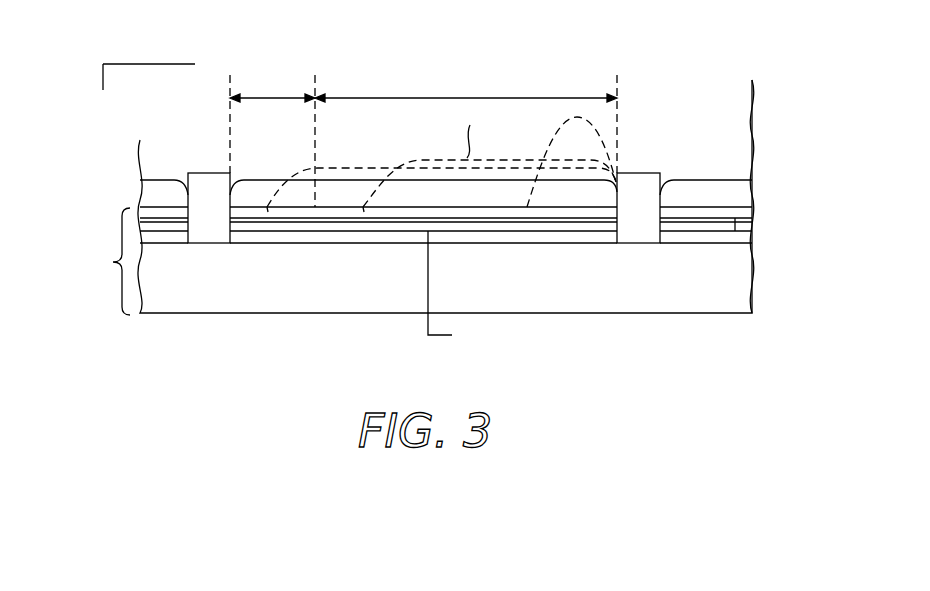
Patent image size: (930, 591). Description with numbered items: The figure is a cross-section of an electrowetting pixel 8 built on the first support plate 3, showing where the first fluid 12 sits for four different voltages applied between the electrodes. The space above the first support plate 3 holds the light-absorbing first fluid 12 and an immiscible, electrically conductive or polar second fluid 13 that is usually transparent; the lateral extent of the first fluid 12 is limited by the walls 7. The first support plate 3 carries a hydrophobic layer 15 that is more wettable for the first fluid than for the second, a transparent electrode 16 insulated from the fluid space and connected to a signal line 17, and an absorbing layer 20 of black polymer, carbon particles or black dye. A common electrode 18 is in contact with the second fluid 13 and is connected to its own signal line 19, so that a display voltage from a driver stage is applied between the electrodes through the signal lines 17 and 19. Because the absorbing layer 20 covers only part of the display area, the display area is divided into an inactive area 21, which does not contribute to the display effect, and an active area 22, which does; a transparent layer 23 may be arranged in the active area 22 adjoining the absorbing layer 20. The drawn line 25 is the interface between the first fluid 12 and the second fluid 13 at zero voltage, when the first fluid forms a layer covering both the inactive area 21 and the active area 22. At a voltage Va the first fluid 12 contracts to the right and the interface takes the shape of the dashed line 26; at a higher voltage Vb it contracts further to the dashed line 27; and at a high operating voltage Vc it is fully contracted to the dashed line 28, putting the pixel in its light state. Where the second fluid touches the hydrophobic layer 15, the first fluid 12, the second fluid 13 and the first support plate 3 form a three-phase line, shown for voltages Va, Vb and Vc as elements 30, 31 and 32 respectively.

The first support plate 3 is at (112, 261).
The walls 7 is at (200, 173).
The pixel 8 is at (433, 46).
The first fluid 12 is at (740, 193).
The second fluid 13 is at (740, 130).
The hydrophobic layer 15 is at (583, 213).
The electrode 16 is at (392, 237).
The signal line 17 is at (441, 337).
The common electrode 18 is at (149, 64).
The signal line 19 is at (103, 77).
The absorbing layer 20 is at (295, 227).
The inactive area 21 is at (272, 84).
The active area 22 is at (466, 85).
The transparent layer 23 is at (488, 230).
The interface at zero voltage 25 is at (340, 170).
The interface at voltage Va 26 is at (390, 168).
The interface at voltage Vb 27 is at (469, 130).
The interface at voltage Vc 28 is at (575, 117).
The three-phase line at voltage Va 30 is at (267, 209).
The three-phase line at voltage Vb 31 is at (363, 209).
The three-phase line at voltage Vc 32 is at (535, 207).